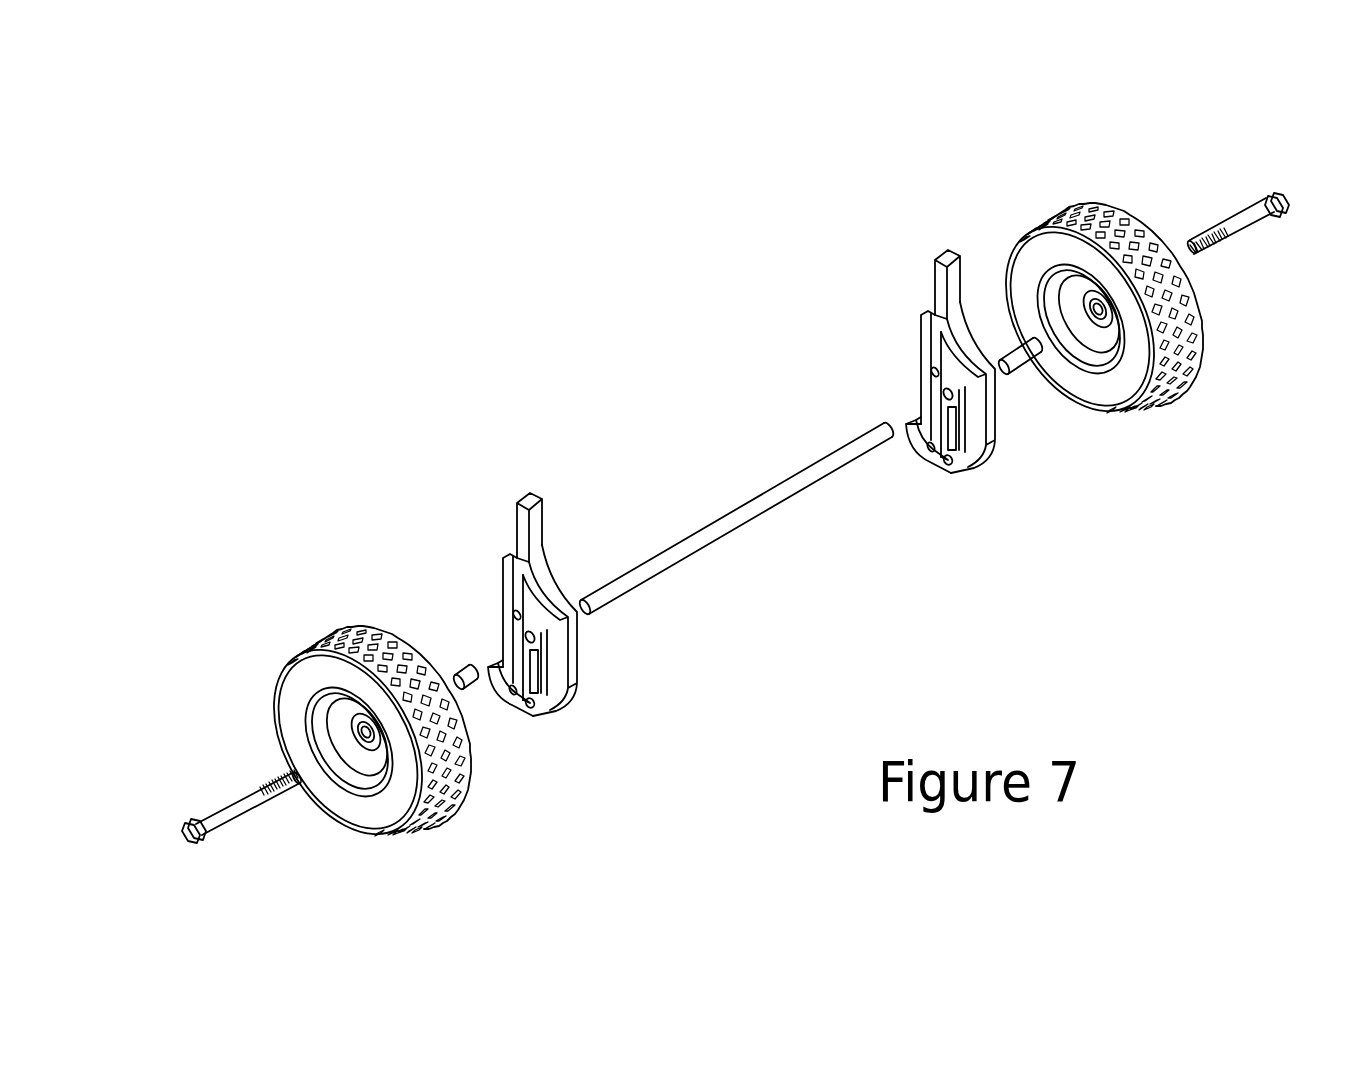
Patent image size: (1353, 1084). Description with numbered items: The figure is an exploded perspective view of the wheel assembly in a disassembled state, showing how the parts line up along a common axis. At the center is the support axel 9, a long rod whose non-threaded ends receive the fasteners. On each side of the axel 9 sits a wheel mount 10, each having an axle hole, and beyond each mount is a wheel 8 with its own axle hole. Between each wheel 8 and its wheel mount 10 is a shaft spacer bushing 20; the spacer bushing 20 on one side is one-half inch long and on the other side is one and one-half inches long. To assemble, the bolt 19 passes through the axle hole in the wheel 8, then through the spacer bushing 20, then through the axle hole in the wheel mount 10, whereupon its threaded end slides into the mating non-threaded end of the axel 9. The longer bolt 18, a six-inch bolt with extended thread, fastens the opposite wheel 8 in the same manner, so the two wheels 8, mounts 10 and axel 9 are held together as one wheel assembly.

The wheel 8 is at (290, 656).
The support axel 9 is at (732, 520).
The wheel mount 10 is at (952, 338).
The bolt with extended thread 18 is at (1258, 212).
The bolt with extended thread 19 is at (242, 812).
The spacer bushing 20 is at (462, 653).